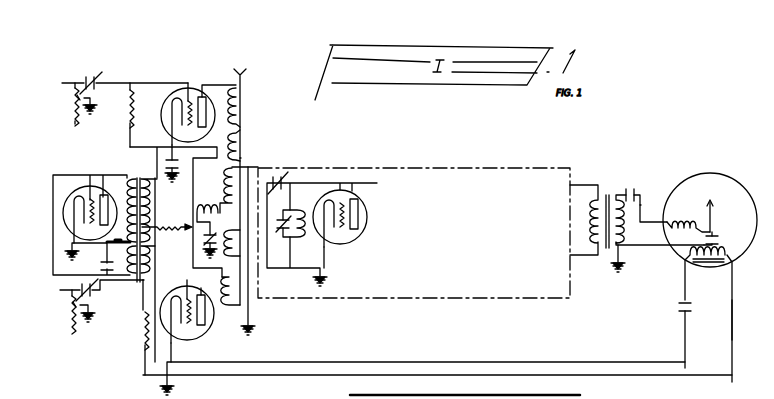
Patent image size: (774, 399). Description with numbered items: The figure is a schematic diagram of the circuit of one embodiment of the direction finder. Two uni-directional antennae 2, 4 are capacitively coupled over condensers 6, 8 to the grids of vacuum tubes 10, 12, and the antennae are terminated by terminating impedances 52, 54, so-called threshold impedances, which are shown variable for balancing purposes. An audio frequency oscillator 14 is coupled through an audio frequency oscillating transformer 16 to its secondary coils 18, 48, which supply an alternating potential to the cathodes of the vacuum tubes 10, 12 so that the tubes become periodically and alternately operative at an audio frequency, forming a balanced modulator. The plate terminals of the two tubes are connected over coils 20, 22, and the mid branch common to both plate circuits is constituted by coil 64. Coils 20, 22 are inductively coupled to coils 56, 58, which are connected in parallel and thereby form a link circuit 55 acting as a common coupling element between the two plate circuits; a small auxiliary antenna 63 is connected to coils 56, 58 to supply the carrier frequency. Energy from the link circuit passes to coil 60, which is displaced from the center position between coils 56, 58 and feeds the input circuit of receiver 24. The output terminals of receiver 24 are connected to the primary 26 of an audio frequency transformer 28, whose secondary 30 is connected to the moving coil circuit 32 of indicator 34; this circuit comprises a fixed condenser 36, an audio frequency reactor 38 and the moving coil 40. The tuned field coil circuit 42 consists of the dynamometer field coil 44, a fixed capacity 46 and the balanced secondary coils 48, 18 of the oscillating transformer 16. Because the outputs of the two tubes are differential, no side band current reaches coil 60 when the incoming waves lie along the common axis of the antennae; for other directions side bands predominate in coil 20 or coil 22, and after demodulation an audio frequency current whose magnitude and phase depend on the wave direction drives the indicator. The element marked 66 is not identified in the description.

The uni-directional antenna 2 is at (64, 83).
The uni-directional antenna 4 is at (61, 290).
The condenser 6 is at (128, 87).
The condenser 8 is at (97, 294).
The vacuum tube 10 is at (168, 118).
The vacuum tube 12 is at (199, 338).
The audio frequency oscillator 14 is at (53, 247).
The audio frequency oscillating transformer 16 is at (137, 283).
The secondary coil 18 is at (146, 266).
The coil 20 is at (240, 108).
The coil 22 is at (229, 309).
The receiver 24 is at (405, 168).
The primary 26 is at (595, 232).
The audio frequency transformer 28 is at (608, 192).
The secondary 30 is at (628, 231).
The moving coil circuit 32 is at (630, 252).
The indicator 34 is at (726, 178).
The fixed condenser 36 is at (632, 191).
The audio frequency reactor 38 is at (666, 214).
The moving coil 40 is at (719, 240).
The tuned field coil circuit 42 is at (733, 320).
The dynamometer field coil 44 is at (683, 268).
The fixed capacity 46 is at (682, 310).
The secondary coil 48 is at (146, 201).
The terminating impedance 52 is at (72, 100).
The terminating impedance 54 is at (70, 318).
The link circuit 55 is at (249, 160).
The coil 56 is at (239, 136).
The coil 58 is at (233, 258).
The coil 60 is at (221, 186).
The auxiliary antenna 63 is at (250, 81).
The coil 64 is at (212, 199).
The tuning condenser 66 is at (205, 238).